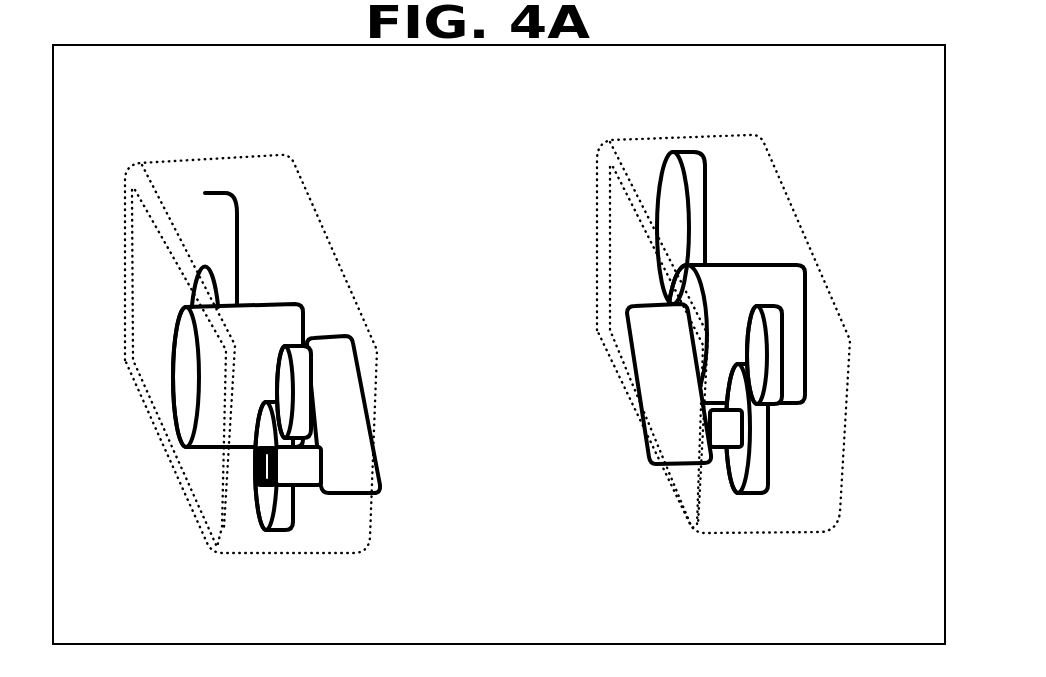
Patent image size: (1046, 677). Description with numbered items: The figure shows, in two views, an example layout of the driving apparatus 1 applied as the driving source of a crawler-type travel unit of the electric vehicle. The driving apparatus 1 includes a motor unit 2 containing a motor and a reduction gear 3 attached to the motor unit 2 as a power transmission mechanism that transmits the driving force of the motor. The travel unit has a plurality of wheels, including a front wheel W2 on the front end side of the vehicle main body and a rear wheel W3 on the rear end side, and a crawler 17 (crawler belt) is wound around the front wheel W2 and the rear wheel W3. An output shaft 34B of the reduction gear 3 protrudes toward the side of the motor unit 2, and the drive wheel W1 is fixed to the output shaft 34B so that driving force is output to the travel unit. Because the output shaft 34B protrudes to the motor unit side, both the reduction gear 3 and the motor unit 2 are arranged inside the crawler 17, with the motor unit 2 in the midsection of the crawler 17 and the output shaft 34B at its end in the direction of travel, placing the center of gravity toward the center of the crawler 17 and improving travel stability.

The driving apparatus 1 is at (150, 333).
The motor unit 2 is at (187, 422).
The reduction gear 3 is at (374, 399).
The crawler 17 is at (300, 183).
The output shaft 34B is at (310, 473).
The drive wheel W1 is at (283, 522).
The front wheel W2 is at (215, 197).
The rear wheel W3 is at (292, 348).